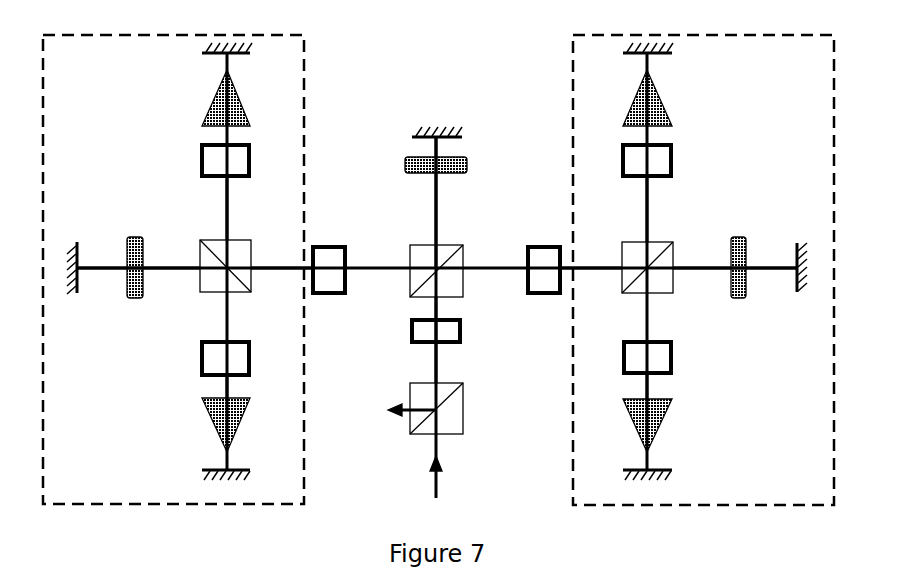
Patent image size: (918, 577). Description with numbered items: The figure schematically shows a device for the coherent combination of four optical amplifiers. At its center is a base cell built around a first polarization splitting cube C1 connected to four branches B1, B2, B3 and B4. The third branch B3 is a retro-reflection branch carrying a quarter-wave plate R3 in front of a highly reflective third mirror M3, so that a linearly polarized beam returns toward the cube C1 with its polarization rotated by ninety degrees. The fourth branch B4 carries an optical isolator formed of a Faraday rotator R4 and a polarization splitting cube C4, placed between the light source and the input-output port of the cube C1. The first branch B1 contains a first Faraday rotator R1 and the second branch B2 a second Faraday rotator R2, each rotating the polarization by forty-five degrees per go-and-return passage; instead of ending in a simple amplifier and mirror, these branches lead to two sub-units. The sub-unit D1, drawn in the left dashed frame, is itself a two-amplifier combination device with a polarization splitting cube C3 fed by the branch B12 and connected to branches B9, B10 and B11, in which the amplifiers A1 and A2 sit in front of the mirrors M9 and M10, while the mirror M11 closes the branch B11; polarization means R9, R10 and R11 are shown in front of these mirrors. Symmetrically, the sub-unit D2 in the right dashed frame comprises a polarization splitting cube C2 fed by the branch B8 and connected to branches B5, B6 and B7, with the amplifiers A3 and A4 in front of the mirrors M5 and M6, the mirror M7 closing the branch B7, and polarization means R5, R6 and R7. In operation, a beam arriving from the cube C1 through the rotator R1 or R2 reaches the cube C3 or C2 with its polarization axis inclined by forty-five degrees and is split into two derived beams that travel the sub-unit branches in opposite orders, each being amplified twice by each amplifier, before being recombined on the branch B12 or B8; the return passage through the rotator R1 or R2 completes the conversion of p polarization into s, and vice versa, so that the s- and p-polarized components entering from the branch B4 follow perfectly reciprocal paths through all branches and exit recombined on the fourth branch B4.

The device for the coherent combination of two amplifiers D1 is at (304, 101).
The device for the coherent combination of two amplifiers D2 is at (573, 92).
The third mirror M3 is at (437, 128).
The mirror M5 is at (672, 53).
The mirror M6 is at (673, 478).
The mirror M7 is at (797, 295).
The mirror M9 is at (200, 472).
The mirror M10 is at (202, 53).
The mirror M11 is at (78, 247).
The first optical amplifier A1 is at (203, 408).
The second optical amplifier A2 is at (202, 105).
The optical amplifier A3 is at (658, 95).
The optical amplifier A4 is at (658, 427).
The first Faraday rotator R1 is at (330, 247).
The second Faraday rotator R2 is at (552, 295).
The quarter-wave plate R3 is at (467, 158).
The Faraday rotator R4 is at (428, 342).
The retarder R5 is at (671, 160).
The retarder R6 is at (671, 360).
The retarder R7 is at (745, 298).
The retarder R9 is at (249, 370).
The retarder R10 is at (202, 163).
The retarder R11 is at (143, 255).
The polarization splitting cube C1 is at (452, 285).
The polarization splitting cube C2 is at (667, 287).
The polarization splitting cube C3 is at (212, 288).
The polarization splitting cube C4 is at (465, 413).
The first branch B1 is at (367, 268).
The second branch B2 is at (500, 268).
The third branch B3 is at (436, 195).
The fourth branch B4 is at (435, 358).
The branch B5 is at (647, 192).
The branch B6 is at (647, 385).
The branch B7 is at (770, 268).
The branch B8 is at (605, 268).
The branch B9 is at (227, 392).
The branch B10 is at (228, 227).
The branch B11 is at (108, 268).
The branch B12 is at (280, 268).